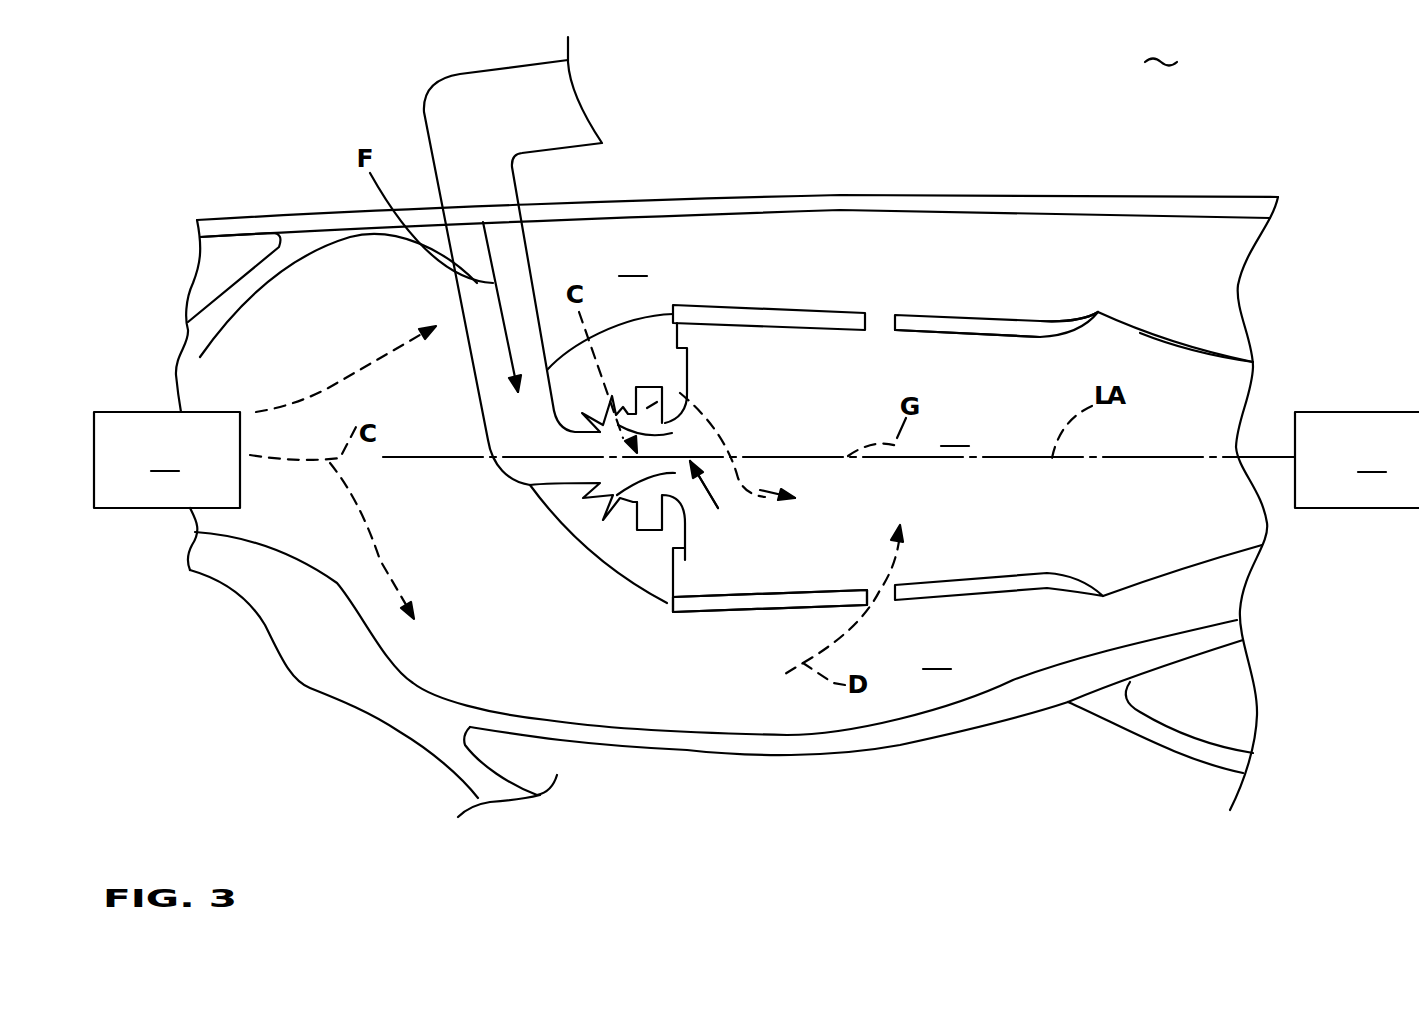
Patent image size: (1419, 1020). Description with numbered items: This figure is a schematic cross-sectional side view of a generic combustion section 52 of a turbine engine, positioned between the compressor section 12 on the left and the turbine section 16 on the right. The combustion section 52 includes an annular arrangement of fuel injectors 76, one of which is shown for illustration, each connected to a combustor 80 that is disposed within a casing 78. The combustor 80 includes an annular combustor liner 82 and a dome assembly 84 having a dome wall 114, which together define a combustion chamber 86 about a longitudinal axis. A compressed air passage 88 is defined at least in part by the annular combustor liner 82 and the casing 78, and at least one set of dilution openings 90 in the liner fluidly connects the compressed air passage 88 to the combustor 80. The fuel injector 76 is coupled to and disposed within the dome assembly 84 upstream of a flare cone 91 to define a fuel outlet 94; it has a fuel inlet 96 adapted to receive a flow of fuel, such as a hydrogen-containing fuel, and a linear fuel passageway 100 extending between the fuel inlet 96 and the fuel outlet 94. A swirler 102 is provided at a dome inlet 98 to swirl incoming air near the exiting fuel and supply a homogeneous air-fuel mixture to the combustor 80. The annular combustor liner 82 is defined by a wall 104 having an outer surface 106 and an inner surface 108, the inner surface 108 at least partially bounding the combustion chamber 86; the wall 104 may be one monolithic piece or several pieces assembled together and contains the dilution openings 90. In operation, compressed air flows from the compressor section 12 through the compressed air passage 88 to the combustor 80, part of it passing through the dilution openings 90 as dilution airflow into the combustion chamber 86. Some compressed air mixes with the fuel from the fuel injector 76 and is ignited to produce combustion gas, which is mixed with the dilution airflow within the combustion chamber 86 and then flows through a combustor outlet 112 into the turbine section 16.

The compressor section 12 is at (167, 460).
The turbine section 16 is at (1357, 460).
The combustion section 52 is at (1211, 418).
The fuel injector 76 is at (633, 503).
The casing 78 is at (1121, 207).
The combustor 80 is at (995, 288).
The annular combustor liner 82 is at (1030, 330).
The dome assembly 84 is at (660, 611).
The combustion chamber 86 is at (839, 437).
The compressed air passage 88 is at (785, 458).
The dilution openings 90 is at (870, 314).
The flare cone 91 is at (688, 405).
The fuel outlet 94 is at (737, 468).
The dome inlet 98 is at (700, 478).
The fuel inlet 96 is at (499, 104).
The linear fuel passageway 100 is at (517, 287).
The swirler 102 is at (652, 520).
The wall 104 is at (960, 590).
The outer surface 106 is at (1005, 318).
The inner surface 108 is at (977, 335).
The combustor outlet 112 is at (1195, 382).
The dome wall 114 is at (683, 373).